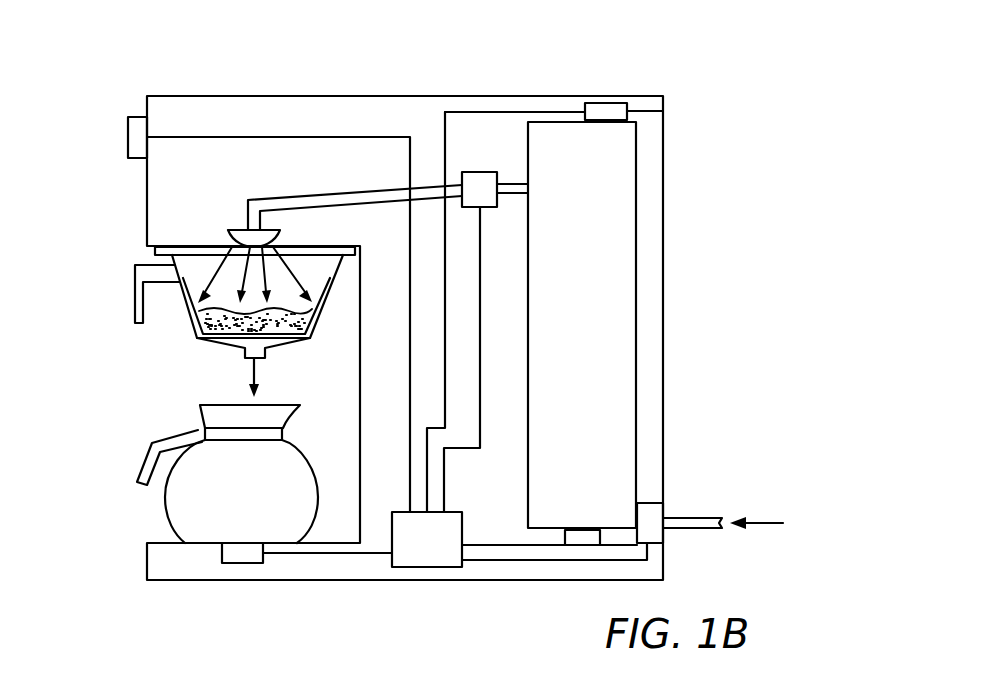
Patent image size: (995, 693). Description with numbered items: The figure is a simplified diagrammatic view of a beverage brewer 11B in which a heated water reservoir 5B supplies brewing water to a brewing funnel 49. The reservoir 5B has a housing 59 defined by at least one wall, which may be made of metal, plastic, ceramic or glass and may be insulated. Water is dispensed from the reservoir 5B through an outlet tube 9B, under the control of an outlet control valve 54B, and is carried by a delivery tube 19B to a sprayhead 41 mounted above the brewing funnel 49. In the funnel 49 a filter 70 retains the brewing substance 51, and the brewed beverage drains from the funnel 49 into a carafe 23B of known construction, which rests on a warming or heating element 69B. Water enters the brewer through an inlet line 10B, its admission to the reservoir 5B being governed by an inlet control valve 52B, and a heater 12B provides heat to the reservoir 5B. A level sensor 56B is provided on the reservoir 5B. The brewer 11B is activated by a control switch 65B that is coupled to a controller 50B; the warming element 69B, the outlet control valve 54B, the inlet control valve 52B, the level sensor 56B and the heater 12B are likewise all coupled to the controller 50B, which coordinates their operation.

The beverage brewer 11B is at (219, 62).
The reservoir 5B is at (573, 86).
The control switch 65B is at (128, 135).
The level sensor 56B is at (663, 111).
The housing 59 is at (636, 293).
The outlet control valve 54B is at (488, 207).
The outlet tube 9B is at (513, 182).
The hot water delivery tube 19B is at (368, 204).
The sprayhead 41 is at (230, 234).
The brewing funnel 49 is at (183, 279).
The filter 70 is at (328, 292).
The brewing substance 51 is at (210, 325).
The carafe 23B is at (148, 527).
The warming or heating element 69B is at (240, 563).
The controller 50B is at (425, 567).
The heater 12B is at (585, 548).
The inlet control valve 52B is at (657, 550).
The water inlet line 10B is at (690, 518).